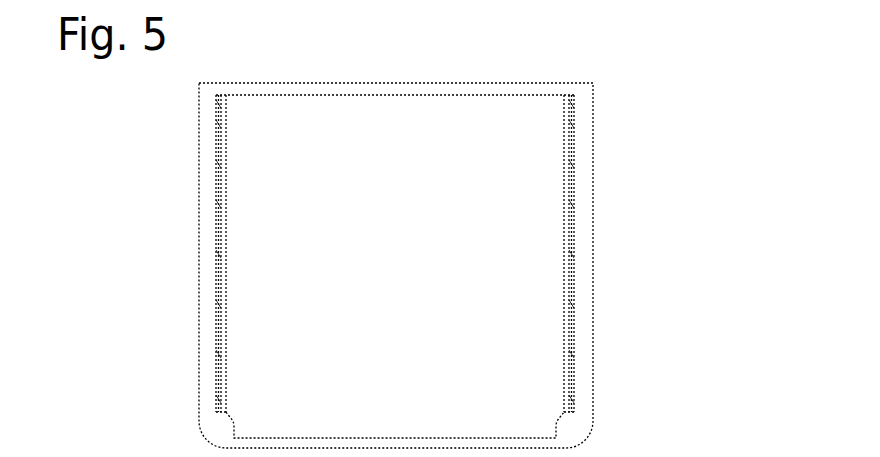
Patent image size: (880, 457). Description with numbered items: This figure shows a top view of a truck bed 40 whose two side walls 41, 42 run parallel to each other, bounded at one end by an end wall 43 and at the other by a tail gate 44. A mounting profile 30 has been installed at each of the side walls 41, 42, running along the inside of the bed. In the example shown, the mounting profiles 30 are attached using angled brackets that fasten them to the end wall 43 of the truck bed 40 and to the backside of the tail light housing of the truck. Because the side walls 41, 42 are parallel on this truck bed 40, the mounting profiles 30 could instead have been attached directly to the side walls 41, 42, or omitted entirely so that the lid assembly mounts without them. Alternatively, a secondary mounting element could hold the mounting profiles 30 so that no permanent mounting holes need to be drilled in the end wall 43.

The mounting profile 30 is at (568, 242).
The truck bed 40 is at (311, 256).
The side wall 41 is at (208, 348).
The side wall 42 is at (583, 188).
The end wall 43 is at (392, 88).
The tail gate 44 is at (494, 445).